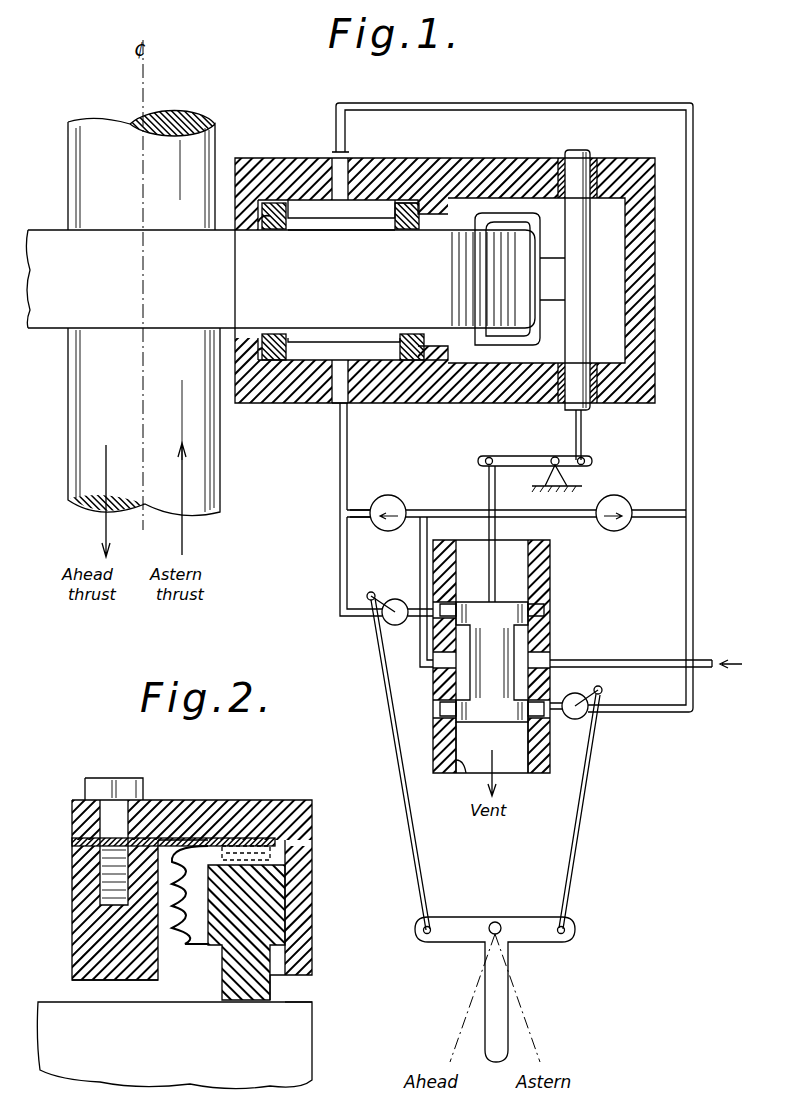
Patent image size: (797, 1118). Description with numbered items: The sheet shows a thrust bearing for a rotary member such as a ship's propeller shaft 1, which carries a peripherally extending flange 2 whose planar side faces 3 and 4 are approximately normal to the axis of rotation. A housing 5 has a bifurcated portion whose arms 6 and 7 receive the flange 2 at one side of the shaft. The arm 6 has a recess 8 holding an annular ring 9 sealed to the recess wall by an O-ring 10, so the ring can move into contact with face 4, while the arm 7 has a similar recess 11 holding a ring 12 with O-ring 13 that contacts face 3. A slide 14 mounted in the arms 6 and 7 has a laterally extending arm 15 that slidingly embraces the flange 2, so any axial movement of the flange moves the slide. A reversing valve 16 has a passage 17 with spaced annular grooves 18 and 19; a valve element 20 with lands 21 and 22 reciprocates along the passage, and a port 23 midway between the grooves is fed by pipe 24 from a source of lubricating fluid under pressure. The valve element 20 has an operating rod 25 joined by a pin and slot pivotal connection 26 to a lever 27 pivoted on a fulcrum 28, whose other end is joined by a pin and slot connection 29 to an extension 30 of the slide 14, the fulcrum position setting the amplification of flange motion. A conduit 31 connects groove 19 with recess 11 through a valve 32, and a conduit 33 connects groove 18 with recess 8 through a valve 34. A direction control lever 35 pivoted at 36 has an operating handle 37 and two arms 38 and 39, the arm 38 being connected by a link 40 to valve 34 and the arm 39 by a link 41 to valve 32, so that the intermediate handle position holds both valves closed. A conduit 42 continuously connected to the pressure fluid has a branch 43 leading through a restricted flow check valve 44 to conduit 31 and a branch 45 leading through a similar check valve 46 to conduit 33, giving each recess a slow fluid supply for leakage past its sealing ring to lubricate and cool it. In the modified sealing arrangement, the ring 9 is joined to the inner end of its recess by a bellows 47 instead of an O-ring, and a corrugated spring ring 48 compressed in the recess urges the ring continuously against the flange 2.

In FIG. 1, the shaft 1 is at (82, 153).
In FIG. 1, the flange 2 is at (206, 282).
In FIG. 2, the flange 2 is at (186, 1054).
In FIG. 1, the side face 3 is at (343, 336).
In FIG. 1, the side face 4 is at (345, 231).
In FIG. 2, the side face 4 is at (300, 1002).
In FIG. 1, the housing 5 is at (627, 172).
In FIG. 1, the arm 6 is at (406, 160).
In FIG. 1, the arm 7 is at (322, 395).
In FIG. 1, the recess 8 is at (358, 206).
In FIG. 1, the annular ring 9 is at (276, 202).
In FIG. 2, the annular ring 9 is at (252, 916).
In FIG. 1, the O-ring 10 is at (262, 216).
In FIG. 1, the recess 11 is at (378, 342).
In FIG. 1, the ring 12 is at (262, 348).
In FIG. 1, the O-ring 13 is at (262, 354).
In FIG. 1, the slide 14 is at (582, 246).
In FIG. 1, the arm 15 is at (495, 217).
In FIG. 1, the reversing valve 16 is at (434, 686).
In FIG. 1, the passage 17 is at (468, 770).
In FIG. 1, the annular groove 18 is at (440, 712).
In FIG. 1, the annular groove 19 is at (456, 600).
In FIG. 1, the valve element 20 is at (505, 666).
In FIG. 1, the land 21 is at (482, 712).
In FIG. 1, the land 22 is at (508, 602).
In FIG. 1, the port 23 is at (548, 652).
In FIG. 1, the pipe 24 is at (624, 658).
In FIG. 1, the operating rod 25 is at (488, 492).
In FIG. 1, the pin and slot pivotal connection 26 is at (480, 462).
In FIG. 1, the lever 27 is at (518, 456).
In FIG. 1, the fulcrum 28 is at (556, 458).
In FIG. 1, the pin and slot connection 29 is at (578, 470).
In FIG. 1, the extension 30 is at (583, 436).
In FIG. 1, the conduit 31 is at (338, 542).
In FIG. 1, the valve 32 is at (396, 598).
In FIG. 1, the conduit 33 is at (694, 372).
In FIG. 1, the valve 34 is at (600, 688).
In FIG. 1, the direction control lever 35 is at (452, 917).
In FIG. 1, the pivot 36 is at (498, 920).
In FIG. 1, the operating handle 37 is at (498, 996).
In FIG. 1, the arm 38 is at (574, 928).
In FIG. 1, the arm 39 is at (416, 926).
In FIG. 1, the link 40 is at (582, 800).
In FIG. 1, the link 41 is at (386, 738).
In FIG. 1, the conduit 42 is at (420, 642).
In FIG. 1, the branch 43 is at (353, 509).
In FIG. 1, the check valve 44 is at (392, 497).
In FIG. 1, the branch 45 is at (524, 511).
In FIG. 1, the check valve 46 is at (630, 502).
In FIG. 2, the bellows 47 is at (180, 944).
In FIG. 2, the spring ring 48 is at (244, 840).